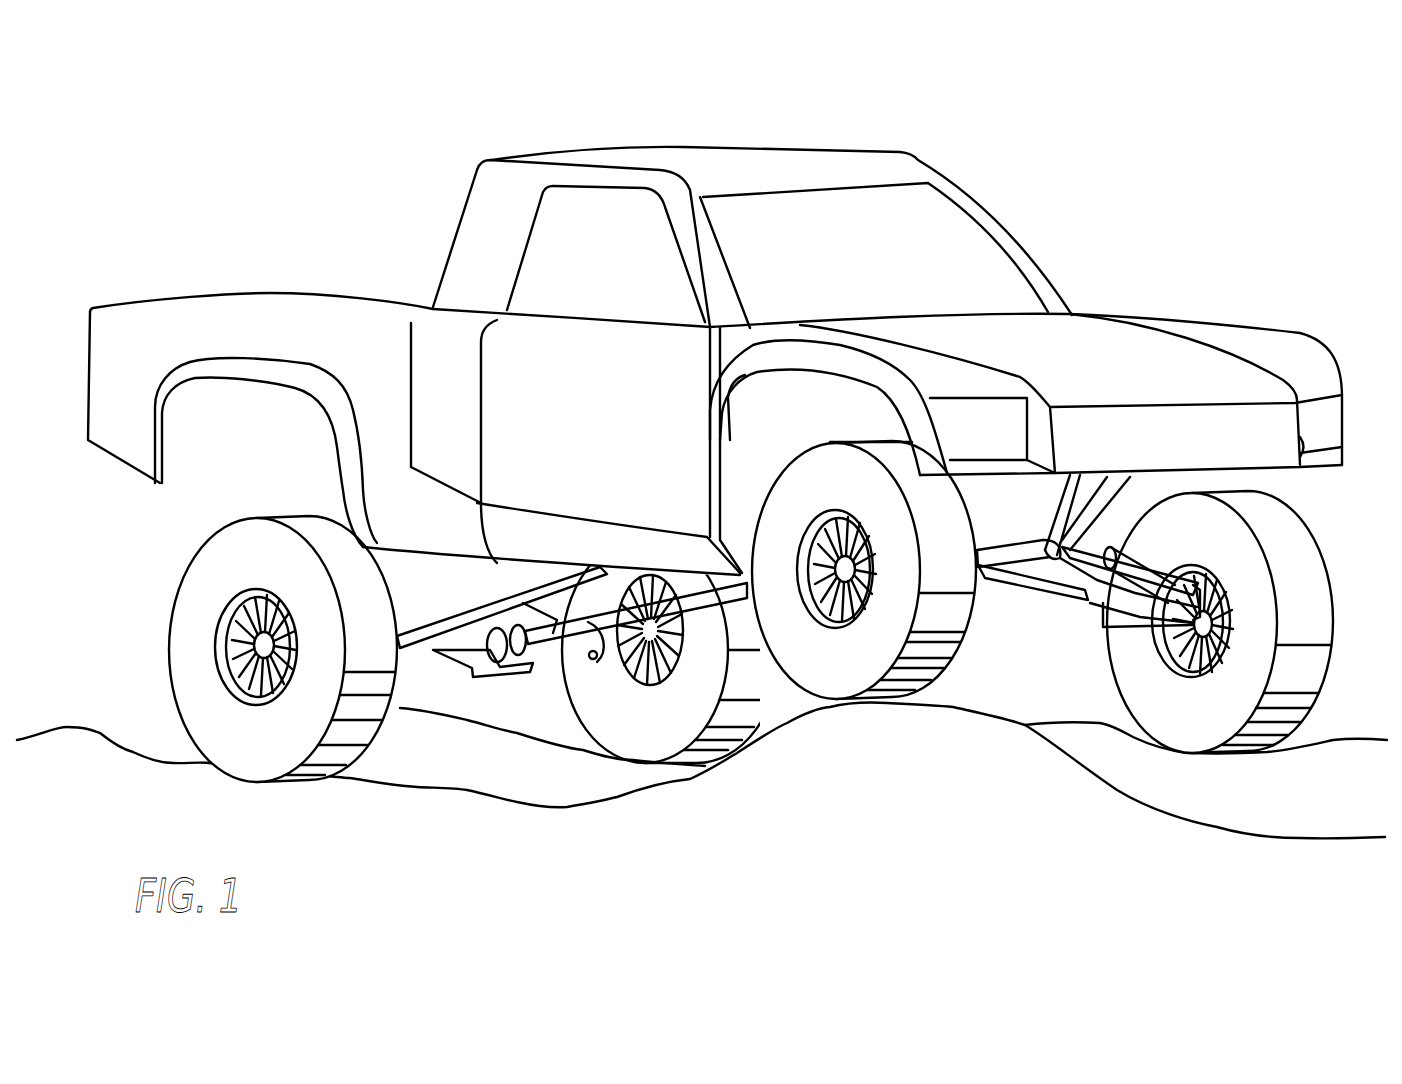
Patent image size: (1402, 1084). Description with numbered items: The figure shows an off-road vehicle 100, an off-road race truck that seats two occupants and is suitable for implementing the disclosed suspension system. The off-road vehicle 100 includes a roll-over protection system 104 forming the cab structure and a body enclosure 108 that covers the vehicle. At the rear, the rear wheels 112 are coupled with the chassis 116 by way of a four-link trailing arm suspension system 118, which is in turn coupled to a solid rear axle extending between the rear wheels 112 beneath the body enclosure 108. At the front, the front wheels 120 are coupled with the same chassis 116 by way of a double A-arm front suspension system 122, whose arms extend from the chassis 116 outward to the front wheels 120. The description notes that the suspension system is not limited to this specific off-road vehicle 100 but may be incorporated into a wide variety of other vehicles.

The off-road vehicle 100 is at (732, 441).
The roll-over protection system 104 is at (580, 180).
The body enclosure 108 is at (557, 382).
The rear wheels 112 is at (170, 617).
The chassis 116 is at (557, 542).
The four-link trailing arm suspension system 118 is at (443, 620).
The front wheels 120 is at (840, 650).
The double A-arm front suspension system 122 is at (1067, 603).